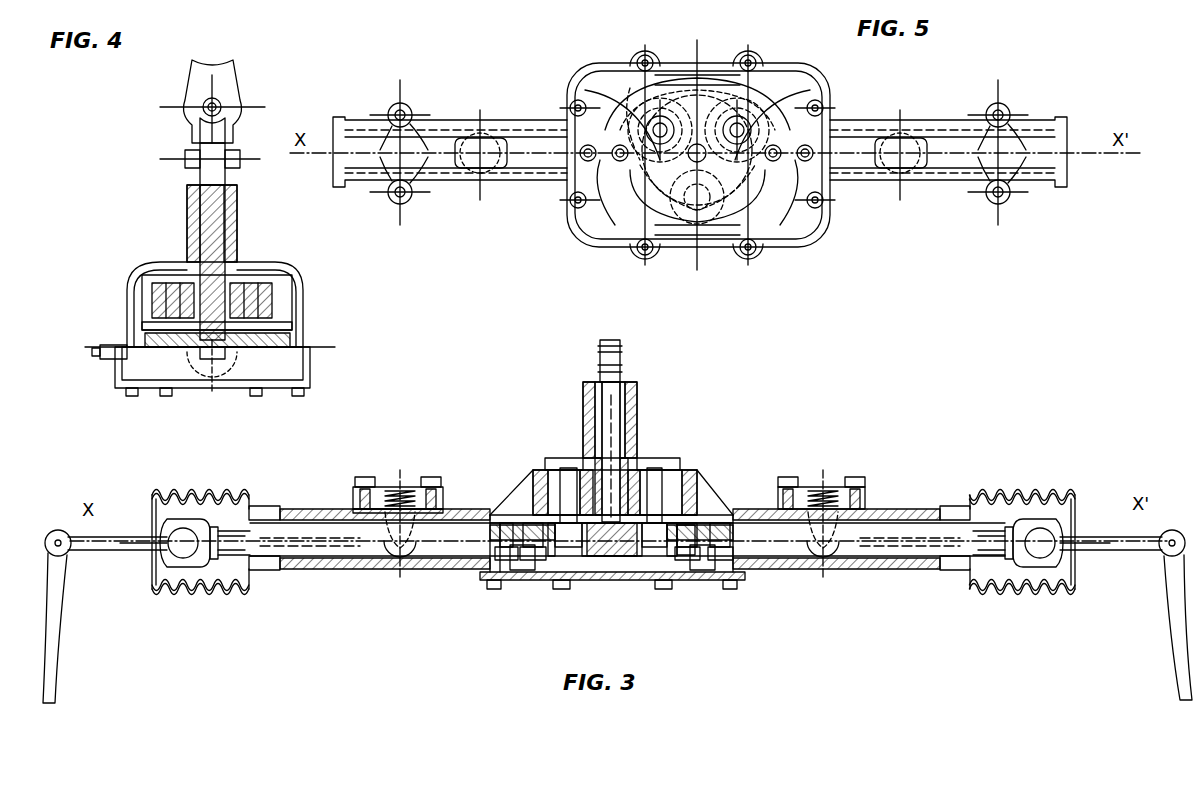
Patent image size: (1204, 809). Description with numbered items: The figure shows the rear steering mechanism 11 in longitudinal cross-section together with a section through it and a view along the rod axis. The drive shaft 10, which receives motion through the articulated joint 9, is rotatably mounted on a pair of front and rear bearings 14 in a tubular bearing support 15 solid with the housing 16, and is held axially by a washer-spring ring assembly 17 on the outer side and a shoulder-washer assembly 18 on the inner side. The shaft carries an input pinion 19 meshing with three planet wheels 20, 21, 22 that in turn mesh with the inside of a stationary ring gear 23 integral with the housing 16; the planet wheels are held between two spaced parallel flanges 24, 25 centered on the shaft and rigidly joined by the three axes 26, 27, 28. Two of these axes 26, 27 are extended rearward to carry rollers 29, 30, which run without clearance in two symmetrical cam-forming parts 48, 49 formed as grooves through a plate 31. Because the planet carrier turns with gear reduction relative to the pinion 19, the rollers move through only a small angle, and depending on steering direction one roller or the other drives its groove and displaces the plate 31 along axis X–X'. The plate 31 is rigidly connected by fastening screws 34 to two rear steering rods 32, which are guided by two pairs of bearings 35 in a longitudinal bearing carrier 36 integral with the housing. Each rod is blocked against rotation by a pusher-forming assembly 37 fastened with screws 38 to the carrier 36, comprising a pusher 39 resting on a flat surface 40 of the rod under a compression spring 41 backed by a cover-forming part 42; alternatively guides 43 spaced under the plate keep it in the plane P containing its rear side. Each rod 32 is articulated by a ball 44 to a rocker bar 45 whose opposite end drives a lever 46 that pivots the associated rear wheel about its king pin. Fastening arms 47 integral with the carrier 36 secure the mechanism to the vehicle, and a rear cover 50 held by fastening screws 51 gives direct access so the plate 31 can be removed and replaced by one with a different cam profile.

In FIG. 4, the articulated joint 9 is at (238, 78).
In FIG. 4, the drive shaft 10 is at (220, 205).
In FIG. 5, the drive shaft 10 is at (697, 140).
In FIG. 3, the drive shaft 10 is at (618, 402).
In FIG. 3, the rear steering mechanism 11 is at (665, 420).
In FIG. 3, the front and rear bearings 14 is at (625, 422).
In FIG. 4, the tubular bearing support 15 is at (187, 232).
In FIG. 3, the tubular bearing support 15 is at (583, 402).
In FIG. 5, the housing 16 is at (830, 98).
In FIG. 3, the housing 16 is at (540, 522).
In FIG. 3, the washer-spring ring assembly 17 is at (592, 387).
In FIG. 3, the shoulder-washer assembly 18 is at (570, 472).
In FIG. 5, the input pinion 19 is at (795, 82).
In FIG. 3, the input pinion 19 is at (680, 522).
In FIG. 5, the planet wheel 20 is at (655, 118).
In FIG. 3, the planet wheel 20 is at (520, 482).
In FIG. 5, the planet wheel 21 is at (737, 110).
In FIG. 3, the planet wheel 21 is at (710, 462).
In FIG. 5, the planet wheel 22 is at (690, 224).
In FIG. 4, the stationary ring gear 23 is at (292, 290).
In FIG. 5, the stationary ring gear 23 is at (658, 77).
In FIG. 4, the flange 24 is at (130, 268).
In FIG. 3, the flange 24 is at (670, 457).
In FIG. 4, the flange 25 is at (282, 316).
In FIG. 5, the planet wheel axis 26 is at (630, 97).
In FIG. 3, the planet wheel axis 26 is at (558, 472).
In FIG. 5, the planet wheel axis 27 is at (748, 125).
In FIG. 3, the planet wheel axis 27 is at (672, 460).
In FIG. 5, the planet wheel axis 28 is at (700, 212).
In FIG. 5, the roller 29 is at (638, 125).
In FIG. 3, the roller 29 is at (512, 527).
In FIG. 5, the roller 30 is at (740, 110).
In FIG. 3, the roller 30 is at (700, 527).
In FIG. 4, the plate 31 is at (148, 358).
In FIG. 3, the plate 31 is at (598, 574).
In FIG. 3, the rear steering rod 32 is at (432, 556).
In FIG. 3, the fastening screw 34 is at (503, 577).
In FIG. 3, the bearing 35 is at (232, 500).
In FIG. 3, the longitudinal bearing carrier 36 is at (268, 508).
In FIG. 3, the pusher-forming assembly 37 is at (398, 481).
In FIG. 3, the fastening screw 38 is at (365, 480).
In FIG. 3, the pusher 39 is at (395, 560).
In FIG. 3, the flat surface 40 is at (340, 508).
In FIG. 3, the compression spring 41 is at (436, 509).
In FIG. 3, the cover-forming part 42 is at (405, 488).
In FIG. 4, the guide 43 is at (140, 347).
In FIG. 3, the ball 44 is at (184, 528).
In FIG. 3, the rocker bar 45 is at (114, 537).
In FIG. 3, the lever 46 is at (58, 657).
In FIG. 5, the fastening arm 47 is at (412, 105).
In FIG. 5, the cam-forming part 48 is at (630, 207).
In FIG. 5, the cam-forming part 49 is at (783, 222).
In FIG. 3, the cover 50 is at (538, 574).
In FIG. 3, the fastening screw 51 is at (485, 586).
In FIG. 4, the plane P is at (338, 345).